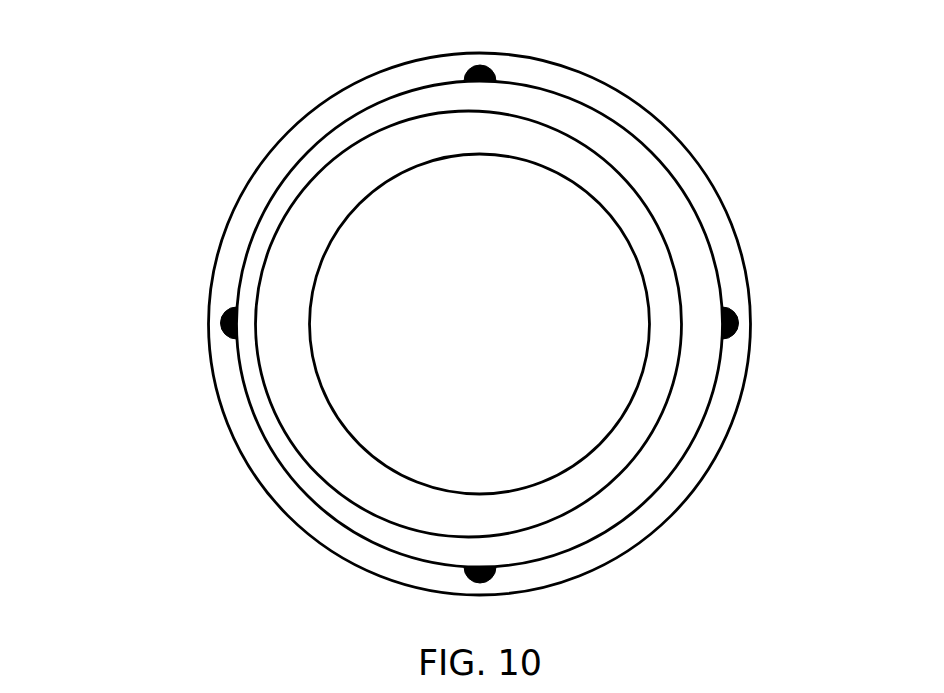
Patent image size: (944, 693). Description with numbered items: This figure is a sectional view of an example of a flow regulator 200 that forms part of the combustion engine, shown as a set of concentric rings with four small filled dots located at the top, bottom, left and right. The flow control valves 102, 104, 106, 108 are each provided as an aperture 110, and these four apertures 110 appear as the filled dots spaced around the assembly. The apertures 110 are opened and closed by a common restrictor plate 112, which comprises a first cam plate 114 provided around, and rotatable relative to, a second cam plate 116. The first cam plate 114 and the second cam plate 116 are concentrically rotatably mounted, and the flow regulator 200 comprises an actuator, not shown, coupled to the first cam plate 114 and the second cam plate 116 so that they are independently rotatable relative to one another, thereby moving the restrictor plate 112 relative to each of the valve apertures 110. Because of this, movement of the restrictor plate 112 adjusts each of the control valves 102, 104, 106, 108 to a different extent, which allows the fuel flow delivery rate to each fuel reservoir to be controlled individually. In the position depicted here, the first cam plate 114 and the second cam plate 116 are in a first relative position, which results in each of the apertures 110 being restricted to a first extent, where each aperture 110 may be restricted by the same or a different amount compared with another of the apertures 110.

The flow regulator 200 is at (138, 138).
The flow control valve 102 is at (222, 326).
The flow control valve 104 is at (737, 320).
The flow control valve 106 is at (482, 68).
The flow control valve 108 is at (493, 575).
The aperture 110 is at (490, 315).
The restrictor plate 112 is at (258, 395).
The first cam plate 114 is at (283, 449).
The second cam plate 116 is at (342, 470).